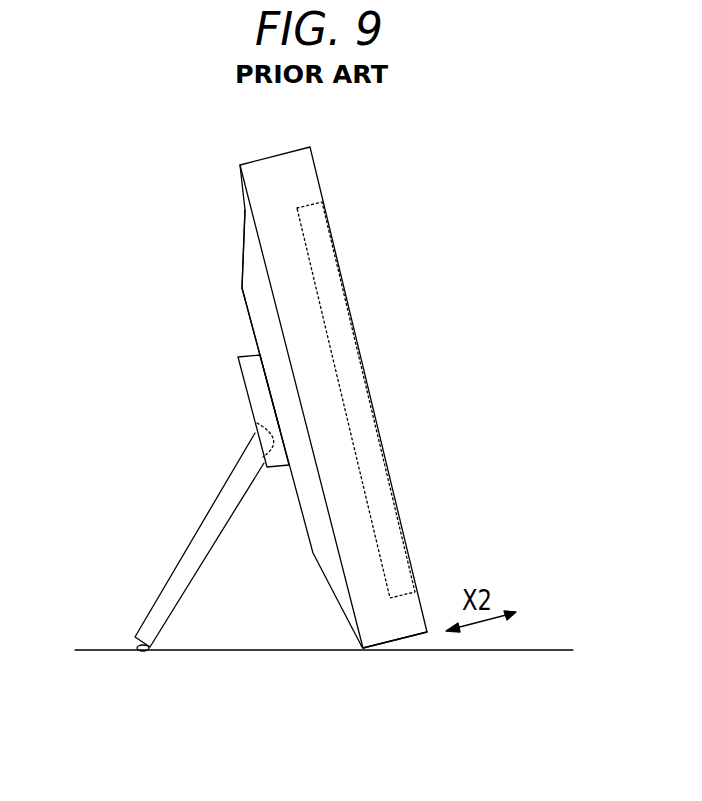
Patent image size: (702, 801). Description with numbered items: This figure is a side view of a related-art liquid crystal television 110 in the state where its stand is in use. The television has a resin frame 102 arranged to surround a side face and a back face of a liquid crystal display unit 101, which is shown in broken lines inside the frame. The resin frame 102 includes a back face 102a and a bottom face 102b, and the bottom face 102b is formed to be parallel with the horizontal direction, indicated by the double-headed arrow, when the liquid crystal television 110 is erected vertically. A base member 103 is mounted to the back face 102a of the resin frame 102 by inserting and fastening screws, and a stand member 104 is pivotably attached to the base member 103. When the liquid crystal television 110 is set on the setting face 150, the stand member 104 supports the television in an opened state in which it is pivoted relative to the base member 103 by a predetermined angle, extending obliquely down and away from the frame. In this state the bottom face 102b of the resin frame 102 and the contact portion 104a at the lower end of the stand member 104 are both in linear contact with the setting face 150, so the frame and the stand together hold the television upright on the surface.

The liquid crystal television 110 is at (200, 191).
The liquid crystal display unit 101 is at (322, 200).
The resin frame 102 is at (333, 437).
The back face 102a is at (242, 287).
The bottom face 102b is at (410, 643).
The base member 103 is at (260, 393).
The stand member 104 is at (210, 528).
The contact portion 104a is at (141, 652).
The setting face 150 is at (552, 650).